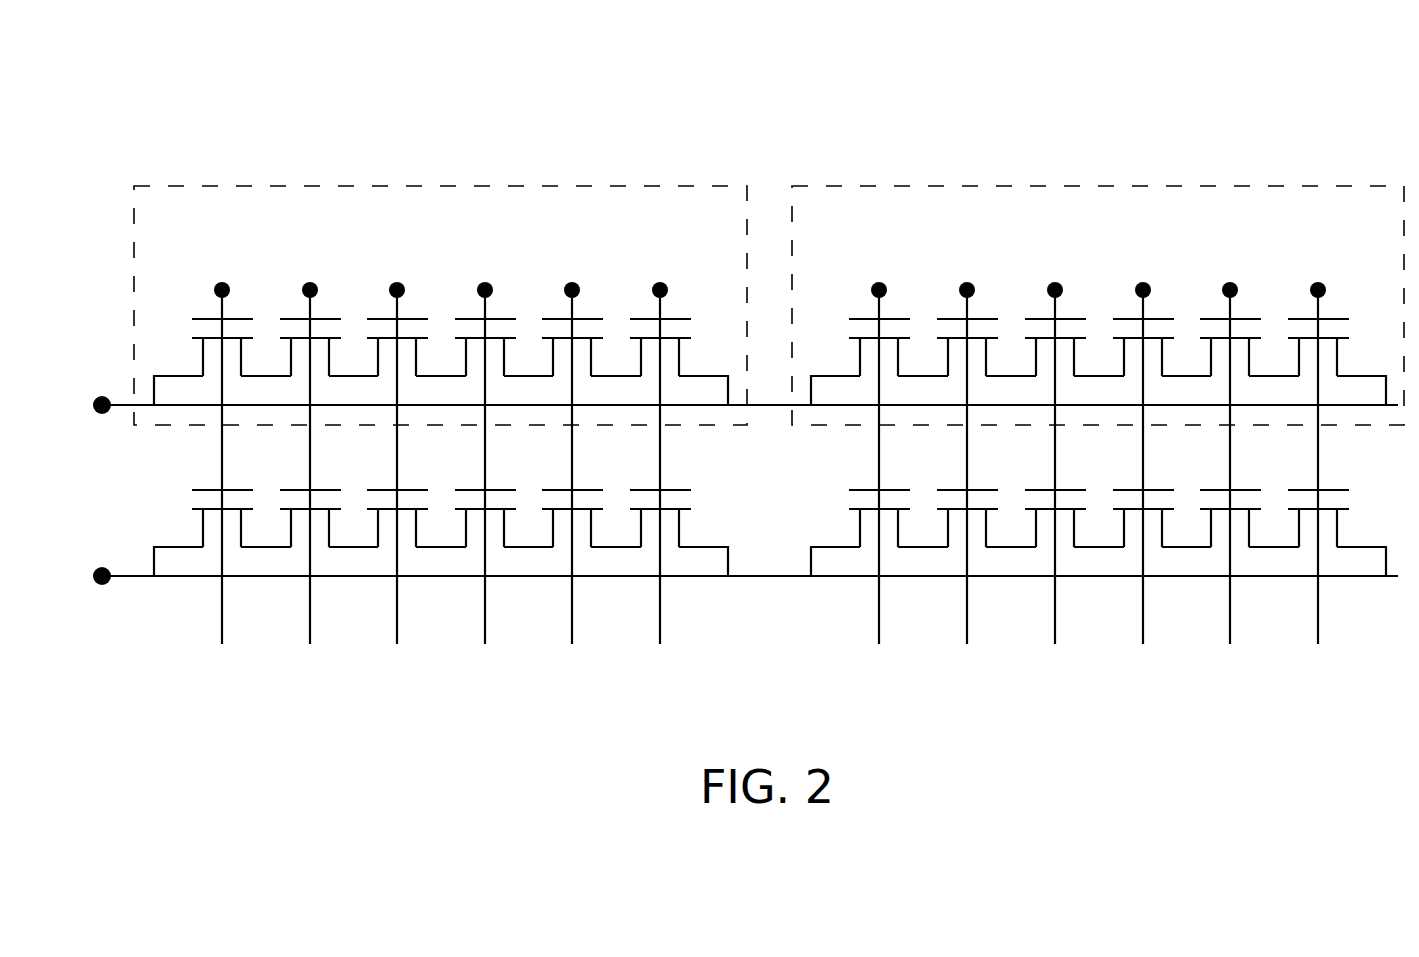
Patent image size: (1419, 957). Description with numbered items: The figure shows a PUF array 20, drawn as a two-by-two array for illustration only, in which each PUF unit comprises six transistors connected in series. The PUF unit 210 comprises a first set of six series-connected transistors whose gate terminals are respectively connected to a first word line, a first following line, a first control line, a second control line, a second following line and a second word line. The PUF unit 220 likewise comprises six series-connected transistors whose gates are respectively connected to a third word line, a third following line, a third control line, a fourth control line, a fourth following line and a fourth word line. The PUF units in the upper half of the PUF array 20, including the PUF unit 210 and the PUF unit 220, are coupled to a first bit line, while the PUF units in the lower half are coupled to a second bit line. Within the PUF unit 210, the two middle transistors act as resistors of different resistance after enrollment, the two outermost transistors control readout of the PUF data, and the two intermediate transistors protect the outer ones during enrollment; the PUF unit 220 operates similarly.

The PUF array 20 is at (842, 93).
The PUF unit 210 is at (424, 187).
The PUF unit 220 is at (1079, 187).